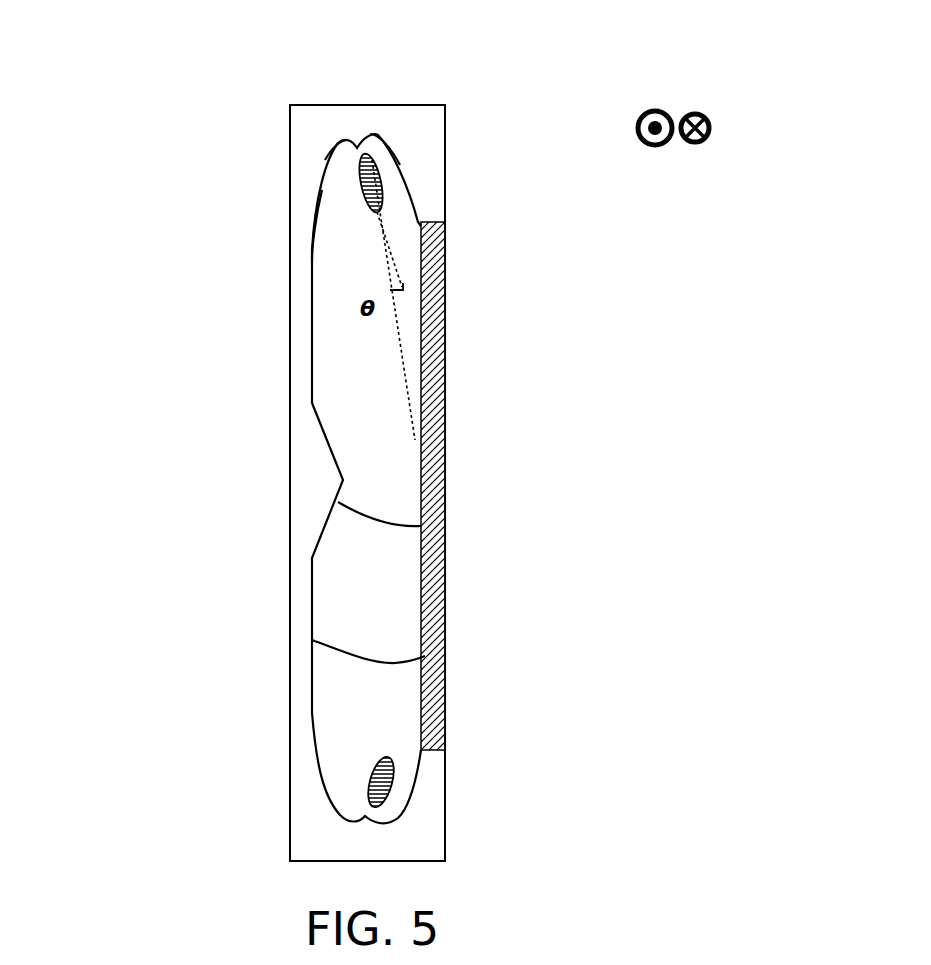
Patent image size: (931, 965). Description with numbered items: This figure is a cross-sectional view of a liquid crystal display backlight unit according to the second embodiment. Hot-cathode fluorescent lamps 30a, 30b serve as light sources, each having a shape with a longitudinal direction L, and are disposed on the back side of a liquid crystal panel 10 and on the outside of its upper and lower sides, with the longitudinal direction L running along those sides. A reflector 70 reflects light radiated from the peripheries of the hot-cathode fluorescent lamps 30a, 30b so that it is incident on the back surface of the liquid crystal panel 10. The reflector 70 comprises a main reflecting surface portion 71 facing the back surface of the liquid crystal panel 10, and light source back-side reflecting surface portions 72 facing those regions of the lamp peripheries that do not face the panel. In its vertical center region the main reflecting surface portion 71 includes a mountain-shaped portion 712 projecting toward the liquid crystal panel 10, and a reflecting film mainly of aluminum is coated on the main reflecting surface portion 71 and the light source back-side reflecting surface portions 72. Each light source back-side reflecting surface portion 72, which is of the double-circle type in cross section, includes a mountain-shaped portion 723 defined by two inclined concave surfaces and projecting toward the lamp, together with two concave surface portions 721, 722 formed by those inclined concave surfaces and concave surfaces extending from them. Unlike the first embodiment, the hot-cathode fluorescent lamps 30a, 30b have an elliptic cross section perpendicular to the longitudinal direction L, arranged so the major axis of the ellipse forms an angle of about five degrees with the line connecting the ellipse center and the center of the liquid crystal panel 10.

The liquid crystal panel 10 is at (425, 492).
The hot-cathode fluorescent lamp 30a is at (373, 168).
The hot-cathode fluorescent lamp 30b is at (387, 785).
The reflector 70 is at (318, 125).
The main reflecting surface portion 71 is at (425, 656).
The mountain-shaped portion 712 is at (425, 525).
The light source back-side reflecting surface portion 72 is at (332, 170).
The concave surface portion 721 is at (337, 142).
The concave surface portion 722 is at (383, 140).
The mountain-shaped portion 723 is at (312, 248).
The longitudinal direction L is at (690, 152).